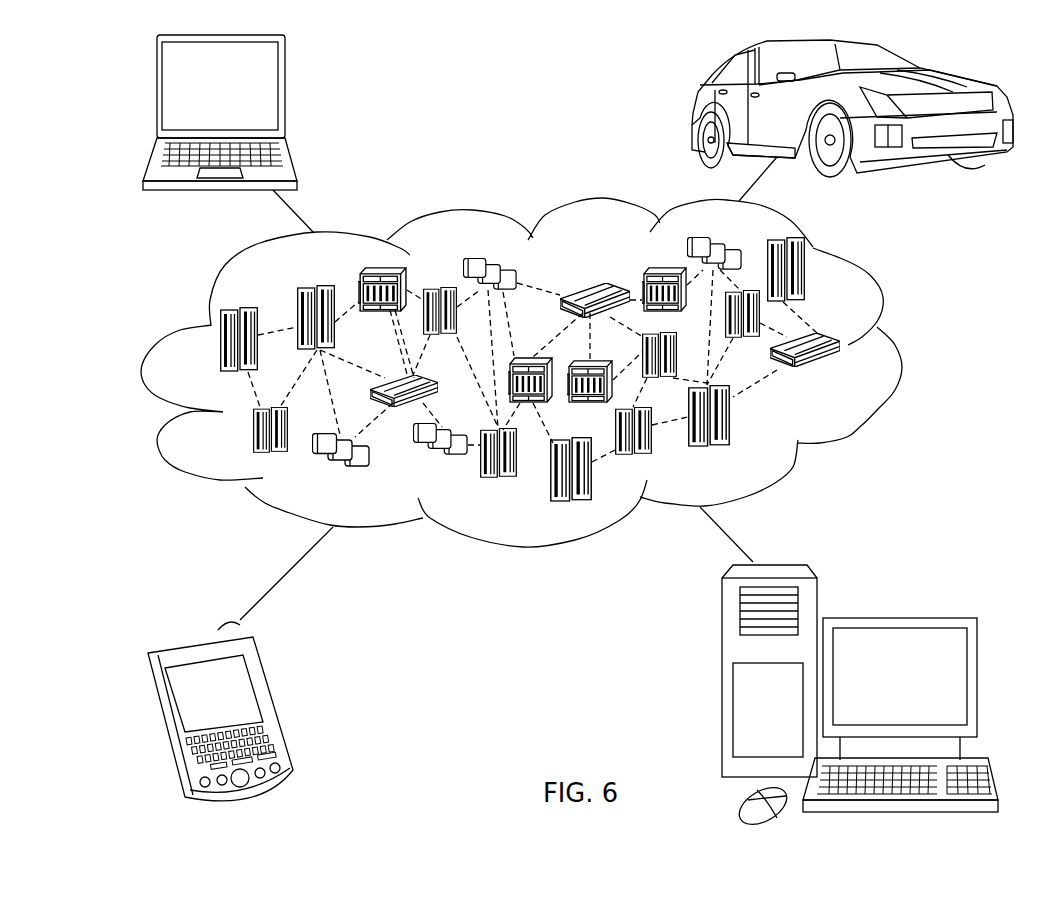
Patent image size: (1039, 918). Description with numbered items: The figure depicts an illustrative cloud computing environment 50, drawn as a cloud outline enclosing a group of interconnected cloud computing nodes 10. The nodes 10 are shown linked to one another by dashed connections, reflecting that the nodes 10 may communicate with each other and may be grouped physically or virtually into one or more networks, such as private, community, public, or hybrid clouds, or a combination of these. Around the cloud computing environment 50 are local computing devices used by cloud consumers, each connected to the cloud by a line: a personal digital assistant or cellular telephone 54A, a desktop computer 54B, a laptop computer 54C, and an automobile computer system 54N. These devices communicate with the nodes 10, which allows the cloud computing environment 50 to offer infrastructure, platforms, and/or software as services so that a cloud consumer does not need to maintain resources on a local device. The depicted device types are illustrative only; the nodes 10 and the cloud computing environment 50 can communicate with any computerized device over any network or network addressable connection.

The cloud computing nodes 10 is at (850, 379).
The cloud computing environment 50 is at (898, 348).
The personal digital assistant or cellular telephone 54A is at (275, 703).
The desktop computer 54B is at (897, 618).
The laptop computer 54C is at (285, 92).
The automobile computer system 54N is at (693, 108).